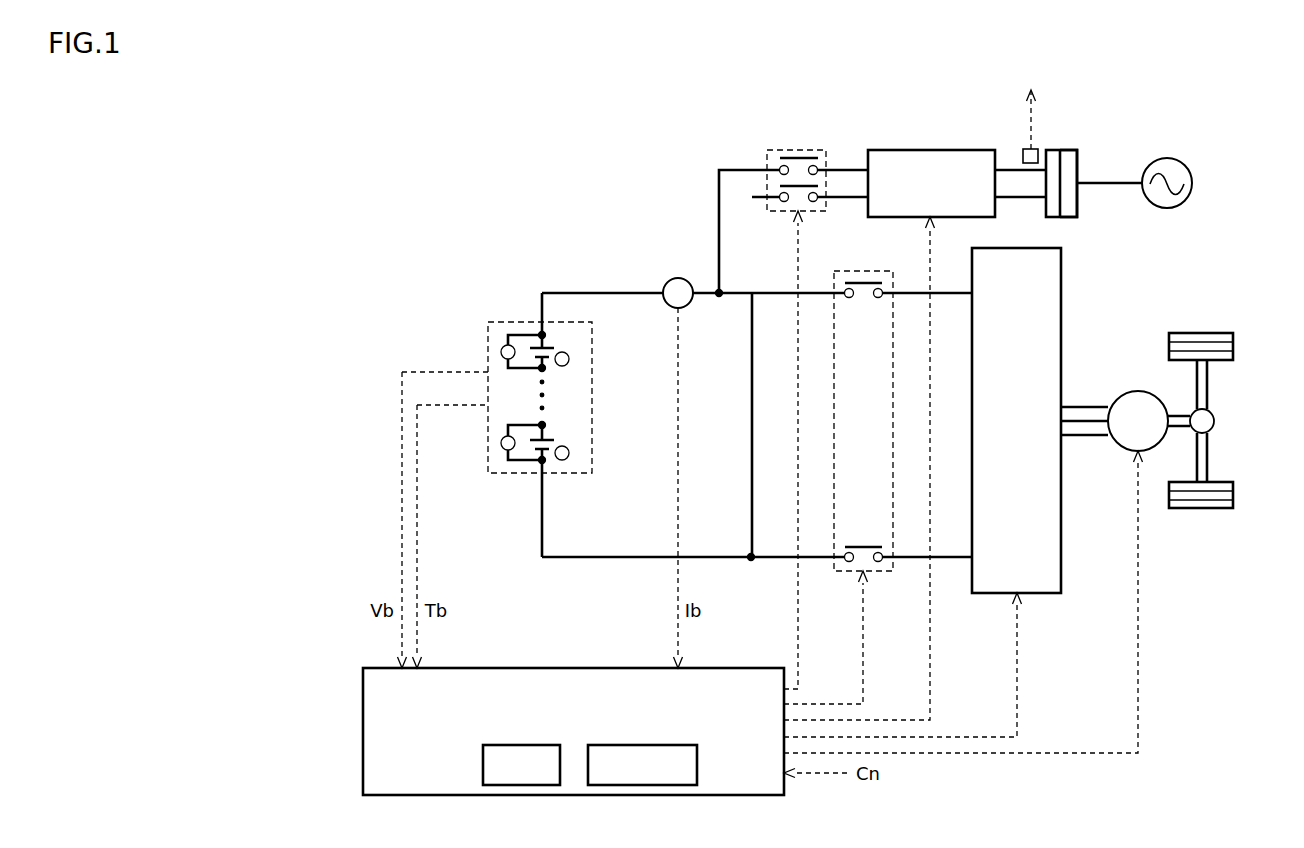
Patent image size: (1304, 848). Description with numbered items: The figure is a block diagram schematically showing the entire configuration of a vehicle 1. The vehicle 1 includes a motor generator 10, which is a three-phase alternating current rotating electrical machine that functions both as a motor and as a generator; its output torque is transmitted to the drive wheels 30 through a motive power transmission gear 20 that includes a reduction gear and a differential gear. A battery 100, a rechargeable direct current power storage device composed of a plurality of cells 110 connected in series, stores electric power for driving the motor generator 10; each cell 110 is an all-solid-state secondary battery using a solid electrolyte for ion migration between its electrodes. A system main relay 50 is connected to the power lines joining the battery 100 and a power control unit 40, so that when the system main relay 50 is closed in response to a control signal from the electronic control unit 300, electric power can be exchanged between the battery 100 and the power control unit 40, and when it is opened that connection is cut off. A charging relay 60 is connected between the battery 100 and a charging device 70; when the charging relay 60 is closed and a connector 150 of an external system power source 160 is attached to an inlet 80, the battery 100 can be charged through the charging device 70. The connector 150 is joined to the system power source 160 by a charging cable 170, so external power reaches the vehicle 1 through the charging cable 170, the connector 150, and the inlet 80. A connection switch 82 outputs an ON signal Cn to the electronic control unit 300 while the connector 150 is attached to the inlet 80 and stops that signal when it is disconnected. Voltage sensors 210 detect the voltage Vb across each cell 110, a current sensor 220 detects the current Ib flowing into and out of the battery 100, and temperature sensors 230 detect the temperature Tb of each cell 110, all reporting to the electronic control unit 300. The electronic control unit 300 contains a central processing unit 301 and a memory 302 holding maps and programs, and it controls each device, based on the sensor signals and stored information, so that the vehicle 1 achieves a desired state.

The vehicle 1 is at (1245, 193).
The motor generator 10 is at (1138, 391).
The motive power transmission gear 20 is at (1214, 418).
The drive wheels 30 is at (1225, 333).
The power control unit 40 is at (992, 248).
The system main relay 50 is at (858, 271).
The charging relay 60 is at (808, 150).
The charging device 70 is at (970, 150).
The inlet 80 is at (1060, 150).
The connection switch 82 is at (1033, 149).
The battery 100 is at (528, 321).
The cell 110 is at (548, 343).
The connector 150 is at (1076, 217).
The system power source 160 is at (1167, 209).
The charging cable 170 is at (1092, 183).
The voltage sensor 210 is at (501, 353).
The current sensor 220 is at (677, 277).
The temperature sensor 230 is at (567, 366).
The electronic control unit 300 is at (573, 729).
The central processing unit 301 is at (525, 786).
The memory 302 is at (647, 786).